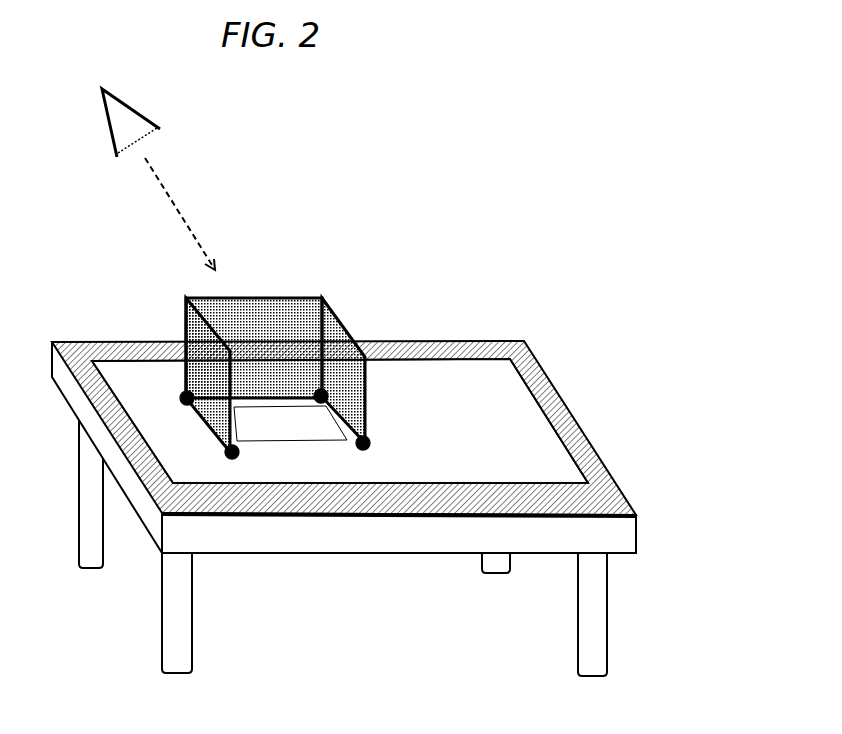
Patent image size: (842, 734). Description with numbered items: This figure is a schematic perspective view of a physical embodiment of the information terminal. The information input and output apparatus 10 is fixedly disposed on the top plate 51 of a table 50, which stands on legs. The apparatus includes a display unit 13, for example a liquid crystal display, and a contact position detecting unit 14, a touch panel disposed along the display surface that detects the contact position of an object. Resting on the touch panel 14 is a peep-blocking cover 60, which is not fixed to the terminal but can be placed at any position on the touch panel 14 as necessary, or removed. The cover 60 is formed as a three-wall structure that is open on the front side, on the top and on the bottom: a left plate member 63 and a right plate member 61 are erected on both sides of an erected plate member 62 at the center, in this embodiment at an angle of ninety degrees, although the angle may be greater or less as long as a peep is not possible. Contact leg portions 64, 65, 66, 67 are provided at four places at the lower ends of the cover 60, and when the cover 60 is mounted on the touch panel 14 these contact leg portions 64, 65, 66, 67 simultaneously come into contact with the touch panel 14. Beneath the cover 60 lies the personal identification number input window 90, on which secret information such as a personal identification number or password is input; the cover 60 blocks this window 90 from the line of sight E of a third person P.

The information input and output apparatus 10 is at (371, 478).
The display unit 13 is at (458, 478).
The contact position detecting unit 14 is at (495, 408).
The table 50 is at (390, 509).
The top plate 51 is at (627, 524).
The peep-blocking cover 60 is at (230, 433).
The right plate member 61 is at (353, 374).
The erected plate member 62 is at (279, 356).
The left plate member 63 is at (222, 385).
The contact leg portion 64 is at (370, 445).
The contact leg portion 65 is at (329, 396).
The contact leg portion 66 is at (225, 452).
The contact leg portion 67 is at (181, 397).
The personal identification number input window 90 is at (286, 423).
The third person P is at (97, 152).
The line of sight E is at (178, 200).